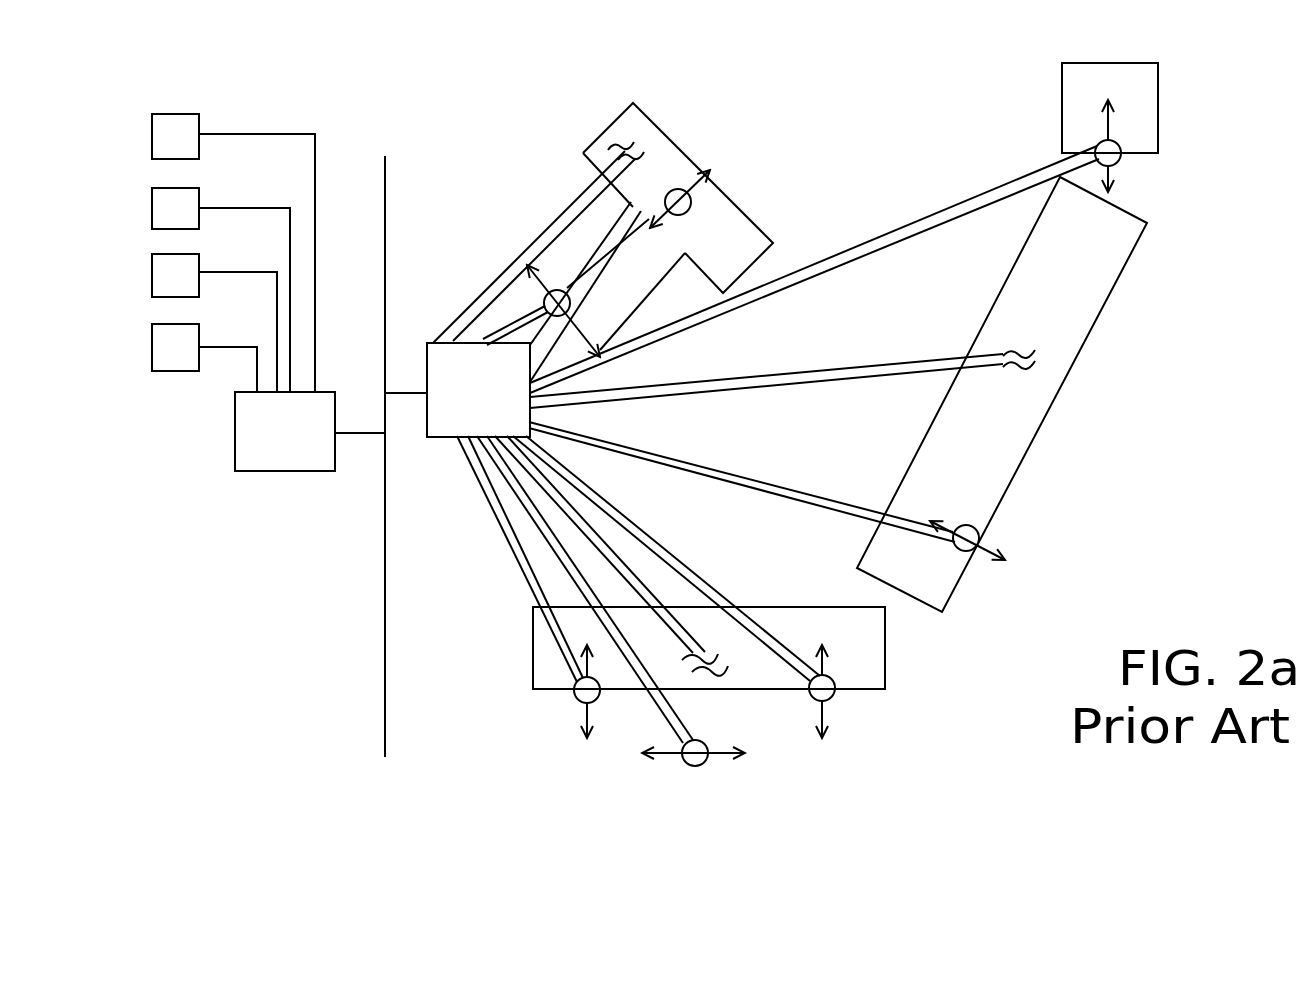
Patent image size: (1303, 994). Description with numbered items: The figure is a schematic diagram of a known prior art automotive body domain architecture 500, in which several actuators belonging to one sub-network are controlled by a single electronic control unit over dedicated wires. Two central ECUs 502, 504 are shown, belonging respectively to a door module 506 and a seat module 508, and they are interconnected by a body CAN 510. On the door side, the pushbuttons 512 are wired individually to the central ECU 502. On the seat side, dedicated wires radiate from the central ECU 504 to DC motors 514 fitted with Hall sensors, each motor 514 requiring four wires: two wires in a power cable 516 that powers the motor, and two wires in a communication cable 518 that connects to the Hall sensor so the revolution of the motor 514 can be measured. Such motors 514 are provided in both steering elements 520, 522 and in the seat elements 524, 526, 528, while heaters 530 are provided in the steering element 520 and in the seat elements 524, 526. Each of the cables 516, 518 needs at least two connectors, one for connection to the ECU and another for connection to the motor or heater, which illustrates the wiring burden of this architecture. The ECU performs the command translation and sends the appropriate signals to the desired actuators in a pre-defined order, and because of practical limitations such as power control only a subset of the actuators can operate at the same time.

The automotive body domain architecture 500 is at (283, 745).
The central ECU 502 is at (312, 451).
The central ECU 504 is at (515, 411).
The door module 506 is at (240, 572).
The seat module 508 is at (468, 627).
The body CAN 510 is at (385, 513).
The pushbuttons 512 is at (200, 150).
The motors 514 is at (553, 291).
The power cable 516 is at (927, 218).
The communication cable 518 is at (900, 245).
The steering element 520 is at (763, 233).
The steering element 522 is at (683, 255).
The seat element 524 is at (885, 653).
The seat element 526 is at (1038, 430).
The seat element 528 is at (1062, 85).
The heaters 530 is at (638, 135).